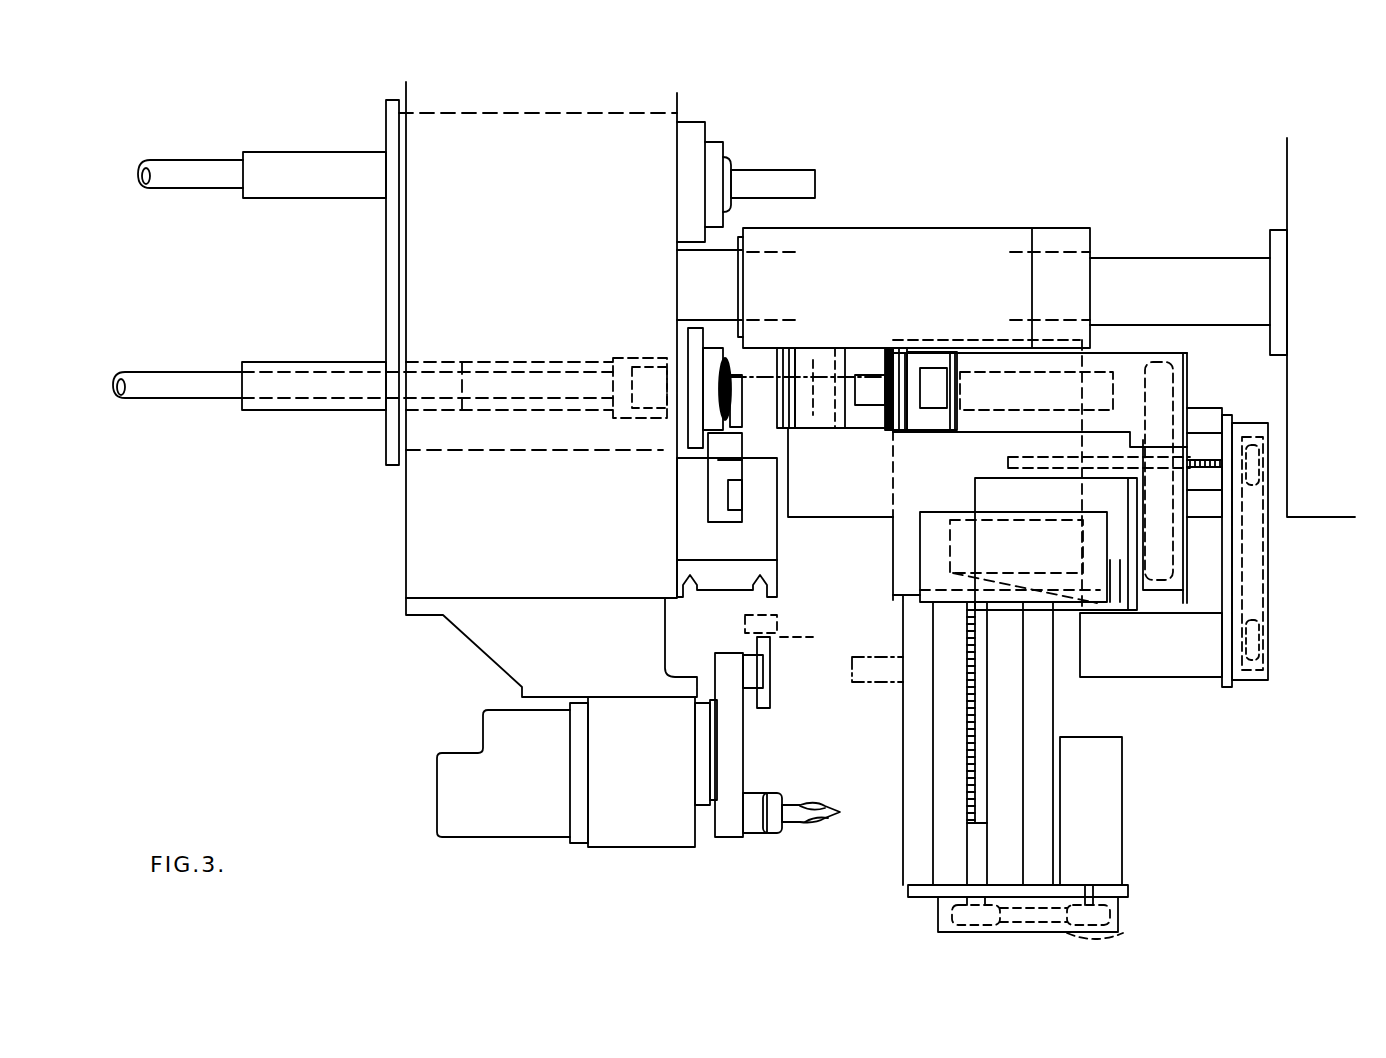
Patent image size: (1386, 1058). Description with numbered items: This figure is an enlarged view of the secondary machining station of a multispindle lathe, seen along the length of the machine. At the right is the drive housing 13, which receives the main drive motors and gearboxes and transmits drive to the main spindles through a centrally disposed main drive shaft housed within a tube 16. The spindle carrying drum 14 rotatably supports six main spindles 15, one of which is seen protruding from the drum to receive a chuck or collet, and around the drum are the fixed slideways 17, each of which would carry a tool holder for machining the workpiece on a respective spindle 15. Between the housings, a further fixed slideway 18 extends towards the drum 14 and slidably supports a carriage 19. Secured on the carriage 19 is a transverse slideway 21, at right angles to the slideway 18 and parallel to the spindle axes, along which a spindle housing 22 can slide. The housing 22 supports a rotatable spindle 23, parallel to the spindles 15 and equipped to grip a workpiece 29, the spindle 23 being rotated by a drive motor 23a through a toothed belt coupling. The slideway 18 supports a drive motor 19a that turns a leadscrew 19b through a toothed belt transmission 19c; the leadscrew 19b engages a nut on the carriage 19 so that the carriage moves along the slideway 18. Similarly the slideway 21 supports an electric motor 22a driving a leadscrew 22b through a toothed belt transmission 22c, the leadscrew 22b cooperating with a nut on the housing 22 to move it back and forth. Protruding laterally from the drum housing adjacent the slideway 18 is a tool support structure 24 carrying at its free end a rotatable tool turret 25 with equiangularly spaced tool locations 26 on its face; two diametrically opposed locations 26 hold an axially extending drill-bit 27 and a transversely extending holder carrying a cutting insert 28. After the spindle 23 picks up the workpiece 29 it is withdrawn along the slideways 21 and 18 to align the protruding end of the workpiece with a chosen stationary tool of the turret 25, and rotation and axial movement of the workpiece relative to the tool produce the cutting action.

The drive housing 13 is at (1287, 180).
The spindle carrying drum 14 is at (590, 203).
The main spindle 15 is at (620, 357).
The tube 16 is at (1118, 287).
The fixed slideway 17 is at (745, 538).
The further fixed slideway 18 is at (1007, 722).
The carriage 19 is at (903, 568).
The drive motor 19a is at (1103, 787).
The leadscrew 19b is at (975, 850).
The toothed belt transmission 19c is at (1123, 933).
The transverse slideway 21 is at (876, 498).
The spindle housing 22 is at (1113, 360).
The electric motor 22a is at (1172, 663).
The leadscrew 22b is at (1207, 455).
The toothed belt transmission 22c is at (1272, 592).
The spindle 23 is at (890, 383).
The drive motor 23a is at (1005, 538).
The tool support structure 24 is at (545, 648).
The tool turret 25 is at (732, 812).
The tool location 26 is at (748, 808).
The drill-bit 27 is at (810, 806).
The cutting insert 28 is at (773, 652).
The workpiece 29 is at (777, 615).